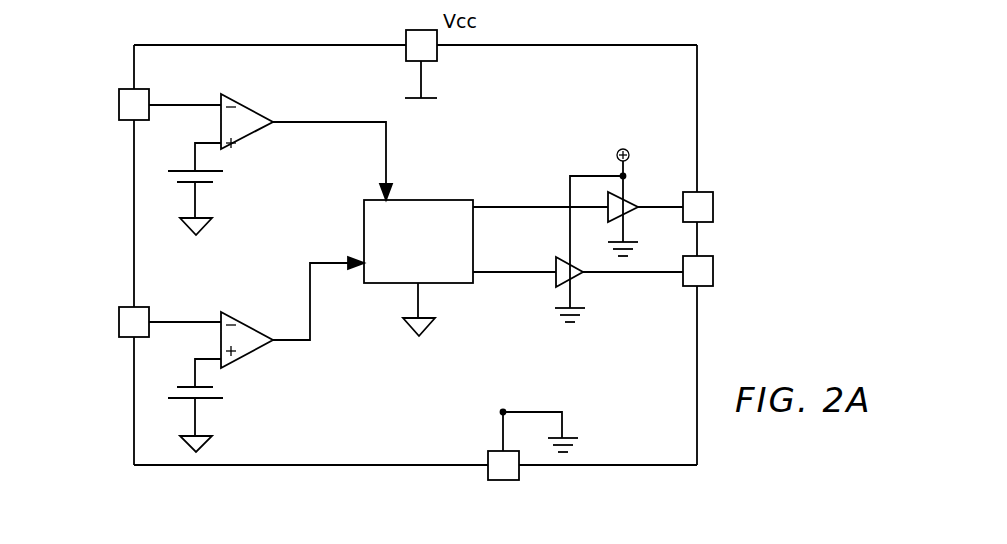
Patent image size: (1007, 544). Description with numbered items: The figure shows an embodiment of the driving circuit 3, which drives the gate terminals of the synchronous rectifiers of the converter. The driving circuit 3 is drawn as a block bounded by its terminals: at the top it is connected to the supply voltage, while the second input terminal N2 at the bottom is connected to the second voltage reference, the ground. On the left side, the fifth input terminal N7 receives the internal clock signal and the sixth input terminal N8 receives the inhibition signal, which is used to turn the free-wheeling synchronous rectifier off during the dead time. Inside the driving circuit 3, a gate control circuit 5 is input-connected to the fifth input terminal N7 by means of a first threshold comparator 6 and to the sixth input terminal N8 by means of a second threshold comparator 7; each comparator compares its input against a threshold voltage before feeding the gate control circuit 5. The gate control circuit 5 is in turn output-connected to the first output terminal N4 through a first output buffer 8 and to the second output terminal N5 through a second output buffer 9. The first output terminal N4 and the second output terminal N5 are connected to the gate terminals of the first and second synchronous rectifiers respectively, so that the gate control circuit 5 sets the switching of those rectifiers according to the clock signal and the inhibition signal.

The driving circuit 3 is at (167, 72).
The gate control circuit 5 is at (373, 235).
The first threshold comparator 6 is at (245, 117).
The second threshold comparator 7 is at (245, 337).
The first output buffer 8 is at (633, 203).
The second output buffer 9 is at (577, 275).
The fifth input terminal N7 is at (130, 108).
The sixth input terminal N8 is at (130, 328).
The first output terminal N4 is at (699, 202).
The second output terminal N5 is at (699, 274).
The second input terminal N2 is at (498, 462).